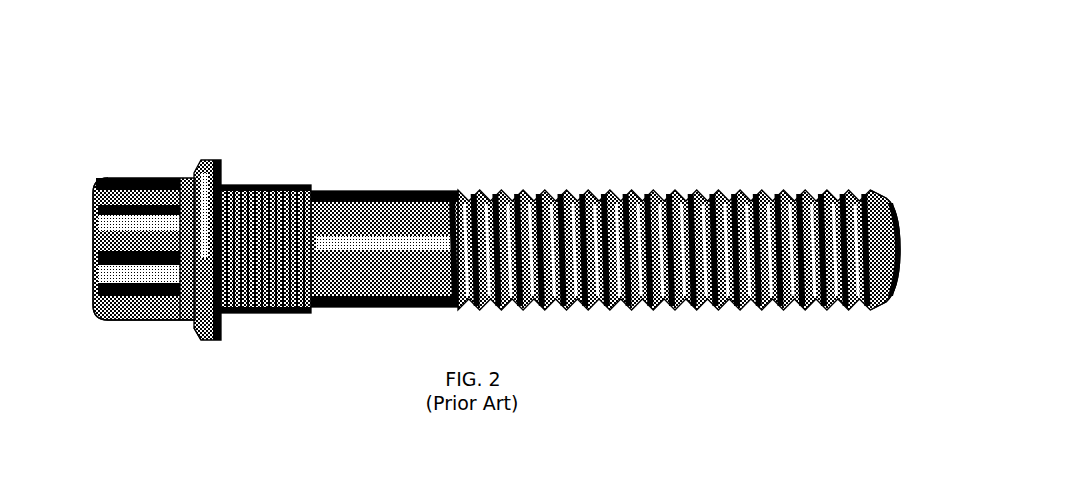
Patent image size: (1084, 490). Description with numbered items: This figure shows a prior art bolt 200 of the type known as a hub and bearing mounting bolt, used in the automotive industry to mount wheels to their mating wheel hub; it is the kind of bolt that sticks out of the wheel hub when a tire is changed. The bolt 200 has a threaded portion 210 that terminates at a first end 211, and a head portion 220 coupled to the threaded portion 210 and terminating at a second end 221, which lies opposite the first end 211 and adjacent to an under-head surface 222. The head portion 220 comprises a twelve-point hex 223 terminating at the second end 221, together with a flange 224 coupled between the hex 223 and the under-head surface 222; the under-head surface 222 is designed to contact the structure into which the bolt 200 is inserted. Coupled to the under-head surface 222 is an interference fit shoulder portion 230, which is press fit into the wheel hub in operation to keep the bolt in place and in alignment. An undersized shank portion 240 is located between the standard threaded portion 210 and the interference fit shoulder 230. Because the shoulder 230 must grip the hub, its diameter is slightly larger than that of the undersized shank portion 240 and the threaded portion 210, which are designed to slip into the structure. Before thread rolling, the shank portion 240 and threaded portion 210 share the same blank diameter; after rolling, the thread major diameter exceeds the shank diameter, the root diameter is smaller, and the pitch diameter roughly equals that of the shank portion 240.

The bolt 200 is at (546, 46).
The threaded portion 210 is at (878, 124).
The first end 211 is at (897, 235).
The head portion 220 is at (85, 130).
The second end 221 is at (75, 223).
The under-head surface 222 is at (221, 317).
The 12-point hex 223 is at (130, 307).
The flange 224 is at (181, 323).
The interference fit shoulder portion 230 is at (207, 130).
The undersized shank portion 240 is at (453, 127).